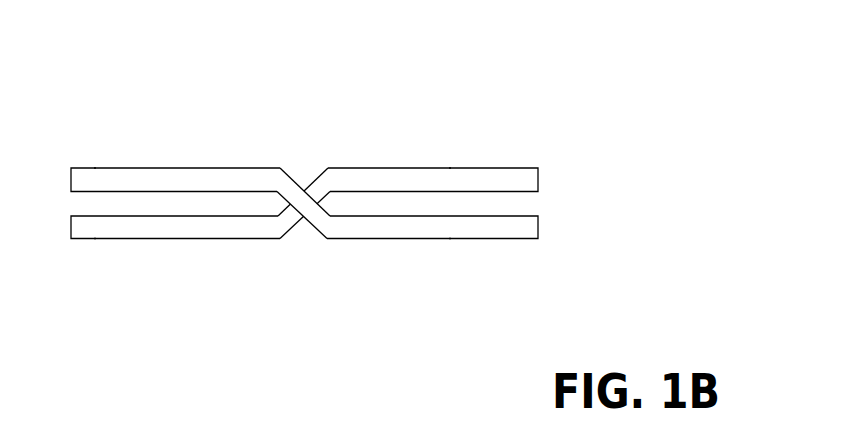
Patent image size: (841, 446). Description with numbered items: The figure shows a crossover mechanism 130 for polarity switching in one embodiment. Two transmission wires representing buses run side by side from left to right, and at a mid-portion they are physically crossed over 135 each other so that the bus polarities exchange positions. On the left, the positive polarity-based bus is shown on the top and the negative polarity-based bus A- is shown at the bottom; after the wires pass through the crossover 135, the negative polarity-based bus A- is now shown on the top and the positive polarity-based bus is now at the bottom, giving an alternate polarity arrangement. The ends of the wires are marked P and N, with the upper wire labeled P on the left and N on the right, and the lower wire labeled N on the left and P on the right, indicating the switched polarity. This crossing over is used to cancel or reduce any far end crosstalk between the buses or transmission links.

The crossover mechanism 130 is at (584, 75).
The crossover 135 is at (303, 160).
The positive (P) transmission line P is at (305, 204).
The negative (N) transmission line N is at (307, 204).
The negative polarity-based bus A- is at (295, 201).